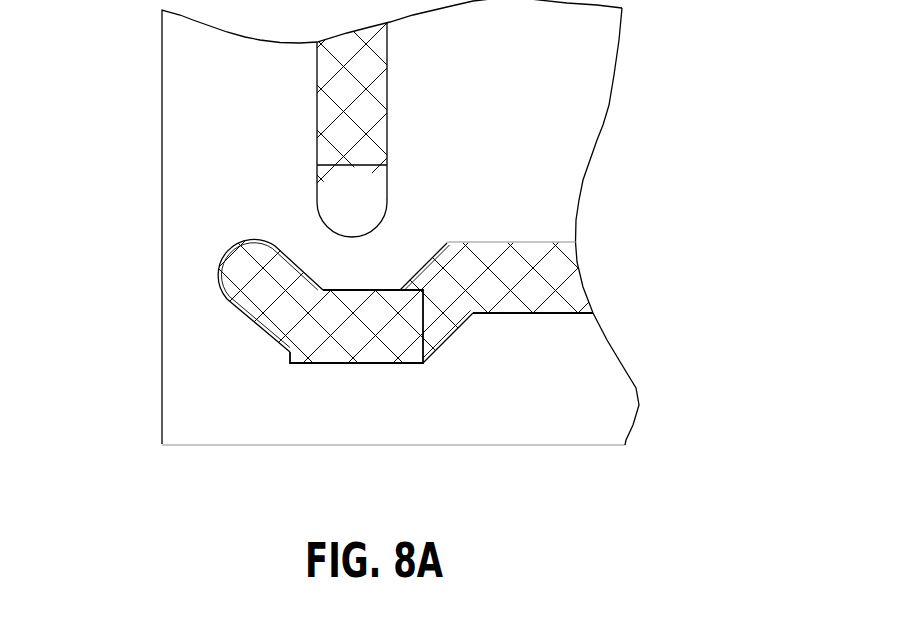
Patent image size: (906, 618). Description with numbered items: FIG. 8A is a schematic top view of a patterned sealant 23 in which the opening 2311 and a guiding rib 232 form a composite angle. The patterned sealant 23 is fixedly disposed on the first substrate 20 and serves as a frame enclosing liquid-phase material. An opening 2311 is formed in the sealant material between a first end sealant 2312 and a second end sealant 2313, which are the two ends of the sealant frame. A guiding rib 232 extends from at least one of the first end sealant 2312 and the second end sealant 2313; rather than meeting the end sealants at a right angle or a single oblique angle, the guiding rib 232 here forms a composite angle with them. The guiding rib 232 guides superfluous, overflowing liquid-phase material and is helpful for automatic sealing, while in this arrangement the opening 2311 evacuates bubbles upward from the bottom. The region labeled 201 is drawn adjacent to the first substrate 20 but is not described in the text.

The first substrate 20 is at (374, 222).
The side wall of housing 201 is at (560, 125).
The patterned sealant 23 is at (403, 273).
The opening 2311 is at (432, 203).
The first end sealant 2312 is at (345, 225).
The second end sealant 2313 is at (478, 253).
The guiding rib 232 is at (260, 332).